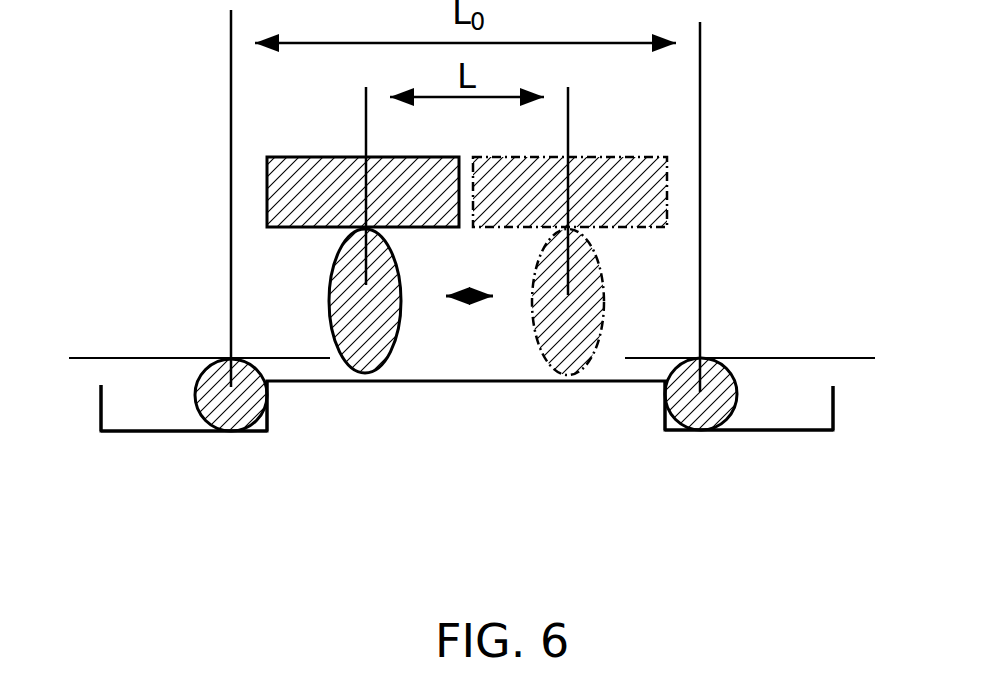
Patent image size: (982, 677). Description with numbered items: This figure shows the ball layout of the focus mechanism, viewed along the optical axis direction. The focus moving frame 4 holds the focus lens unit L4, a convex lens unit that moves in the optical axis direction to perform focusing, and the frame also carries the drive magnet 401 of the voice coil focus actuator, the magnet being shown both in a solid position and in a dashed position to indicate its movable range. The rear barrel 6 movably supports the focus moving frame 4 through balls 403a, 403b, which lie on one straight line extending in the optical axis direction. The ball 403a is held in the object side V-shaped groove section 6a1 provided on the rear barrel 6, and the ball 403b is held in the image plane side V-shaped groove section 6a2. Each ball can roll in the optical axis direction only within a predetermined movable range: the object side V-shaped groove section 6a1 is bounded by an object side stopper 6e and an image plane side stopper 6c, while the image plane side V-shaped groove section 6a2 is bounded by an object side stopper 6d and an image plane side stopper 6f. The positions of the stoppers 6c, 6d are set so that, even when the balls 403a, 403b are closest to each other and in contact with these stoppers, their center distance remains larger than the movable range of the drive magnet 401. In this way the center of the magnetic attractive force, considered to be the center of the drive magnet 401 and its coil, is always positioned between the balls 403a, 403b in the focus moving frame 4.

The focus moving frame 4 is at (856, 329).
The drive magnet 401 is at (264, 187).
The focus lens unit L4 is at (329, 262).
The ball 403a is at (199, 380).
The ball 403b is at (715, 355).
The rear barrel 6 is at (851, 456).
The object side stopper 6e is at (97, 404).
The object side V-shaped groove section 6a1 is at (147, 435).
The image plane side stopper 6c is at (272, 419).
The object side stopper 6d is at (659, 421).
The image plane side V-shaped groove section 6a2 is at (755, 443).
The image plane side stopper 6f is at (839, 402).